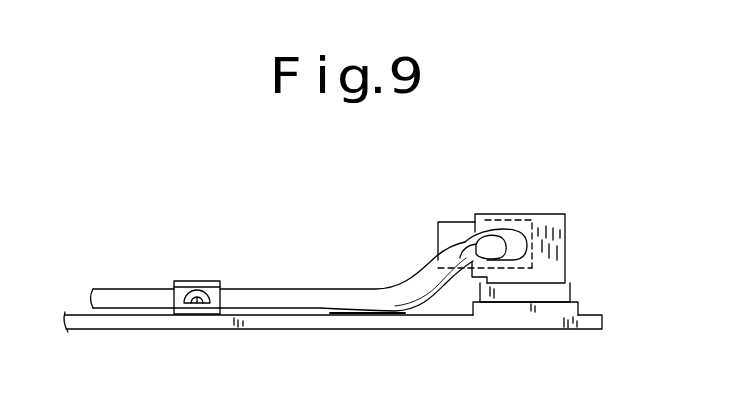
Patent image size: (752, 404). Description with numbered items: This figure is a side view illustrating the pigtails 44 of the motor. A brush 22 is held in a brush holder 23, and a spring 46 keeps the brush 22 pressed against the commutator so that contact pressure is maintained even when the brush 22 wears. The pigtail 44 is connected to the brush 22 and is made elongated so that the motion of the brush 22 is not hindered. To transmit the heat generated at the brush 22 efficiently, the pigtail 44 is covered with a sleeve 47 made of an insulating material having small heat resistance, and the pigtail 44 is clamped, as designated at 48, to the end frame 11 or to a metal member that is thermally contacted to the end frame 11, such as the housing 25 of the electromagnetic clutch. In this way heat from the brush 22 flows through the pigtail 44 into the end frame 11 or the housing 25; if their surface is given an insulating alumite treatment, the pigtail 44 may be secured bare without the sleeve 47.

The end frame 11 is at (367, 325).
The housing 25 is at (333, 351).
The sleeve 47 is at (267, 289).
The clamp 48 is at (194, 281).
The brush 22 is at (438, 242).
The brush holder 23 is at (545, 214).
The pigtail 44 is at (475, 236).
The spring 46 is at (566, 227).